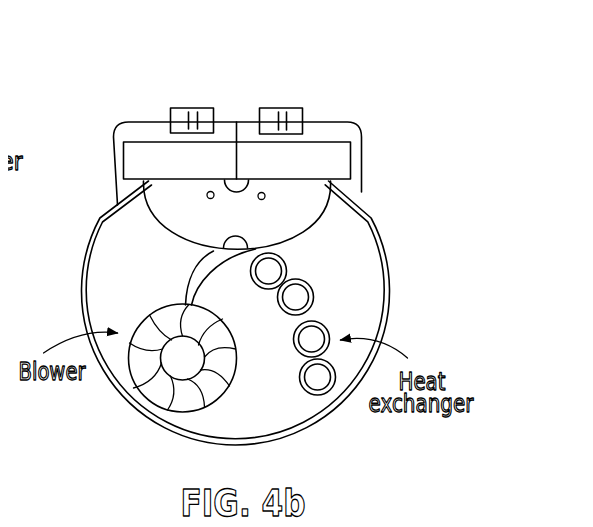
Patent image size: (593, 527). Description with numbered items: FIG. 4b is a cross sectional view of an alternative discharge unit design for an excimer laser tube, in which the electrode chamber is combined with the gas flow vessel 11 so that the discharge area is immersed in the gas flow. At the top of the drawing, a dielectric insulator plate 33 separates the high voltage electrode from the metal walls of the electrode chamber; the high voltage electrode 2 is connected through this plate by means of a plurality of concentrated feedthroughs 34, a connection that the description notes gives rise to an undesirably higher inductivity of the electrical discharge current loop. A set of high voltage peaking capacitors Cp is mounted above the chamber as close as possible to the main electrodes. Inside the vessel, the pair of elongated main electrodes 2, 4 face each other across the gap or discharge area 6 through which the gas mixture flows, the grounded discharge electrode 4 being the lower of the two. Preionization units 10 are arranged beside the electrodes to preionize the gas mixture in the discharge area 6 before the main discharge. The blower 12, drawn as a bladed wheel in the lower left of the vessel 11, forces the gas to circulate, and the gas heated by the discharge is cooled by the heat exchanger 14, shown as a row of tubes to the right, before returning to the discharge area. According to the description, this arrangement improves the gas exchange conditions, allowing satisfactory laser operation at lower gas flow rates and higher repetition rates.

The gas vessel 11 is at (363, 209).
The dielectric insulator plate 33 is at (148, 163).
The peaking capacitors Cp is at (213, 103).
The feedthroughs 34 is at (237, 149).
The discharge area 6 is at (208, 240).
The high voltage electrode 2 is at (236, 190).
The grounded discharge electrode 4 is at (246, 243).
The preionization units 10 is at (206, 195).
The blower 12 is at (230, 344).
The heat exchanger 14 is at (304, 274).